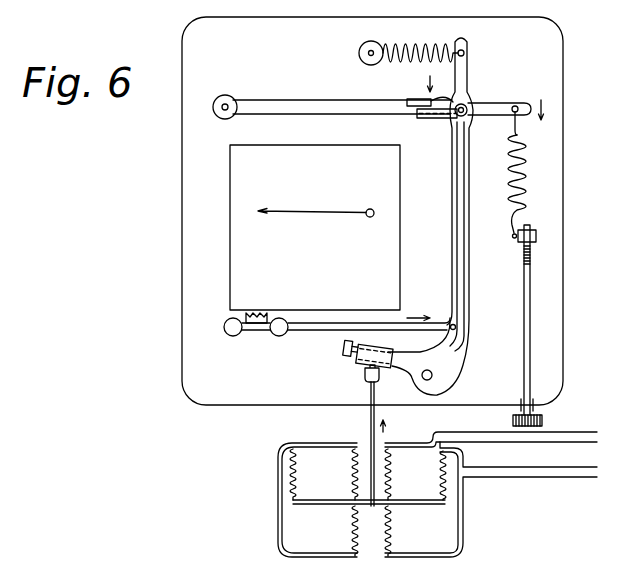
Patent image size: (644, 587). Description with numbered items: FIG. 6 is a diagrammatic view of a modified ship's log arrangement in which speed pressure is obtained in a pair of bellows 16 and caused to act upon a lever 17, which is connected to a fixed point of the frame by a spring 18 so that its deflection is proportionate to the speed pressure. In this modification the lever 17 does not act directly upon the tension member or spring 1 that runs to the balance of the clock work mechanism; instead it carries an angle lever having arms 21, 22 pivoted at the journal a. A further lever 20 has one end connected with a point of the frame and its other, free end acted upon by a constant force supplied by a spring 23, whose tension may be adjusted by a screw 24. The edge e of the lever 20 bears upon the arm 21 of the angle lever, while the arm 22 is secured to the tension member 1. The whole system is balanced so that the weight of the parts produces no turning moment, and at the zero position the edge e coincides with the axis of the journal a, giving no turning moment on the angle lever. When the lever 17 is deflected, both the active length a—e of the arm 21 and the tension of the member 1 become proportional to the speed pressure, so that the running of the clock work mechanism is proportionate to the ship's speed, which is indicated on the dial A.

The spring 1 is at (338, 327).
The bellows 16 is at (290, 511).
The lever 17 is at (452, 237).
The spring 18 is at (422, 46).
The lever 20 is at (487, 104).
The arm of angle lever 21 is at (437, 119).
The arm of angle lever 22 is at (460, 187).
The spring 23 is at (528, 169).
The screw 24 is at (531, 304).
The pivot point a is at (464, 107).
The edge e is at (428, 100).
The indicator dial A is at (315, 227).